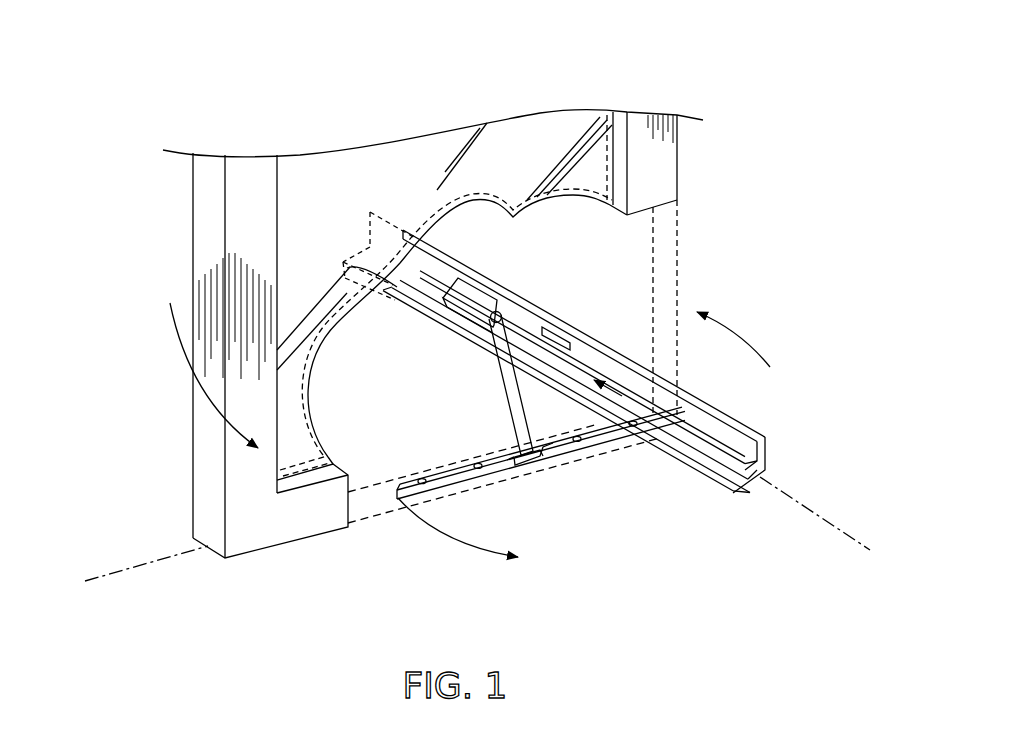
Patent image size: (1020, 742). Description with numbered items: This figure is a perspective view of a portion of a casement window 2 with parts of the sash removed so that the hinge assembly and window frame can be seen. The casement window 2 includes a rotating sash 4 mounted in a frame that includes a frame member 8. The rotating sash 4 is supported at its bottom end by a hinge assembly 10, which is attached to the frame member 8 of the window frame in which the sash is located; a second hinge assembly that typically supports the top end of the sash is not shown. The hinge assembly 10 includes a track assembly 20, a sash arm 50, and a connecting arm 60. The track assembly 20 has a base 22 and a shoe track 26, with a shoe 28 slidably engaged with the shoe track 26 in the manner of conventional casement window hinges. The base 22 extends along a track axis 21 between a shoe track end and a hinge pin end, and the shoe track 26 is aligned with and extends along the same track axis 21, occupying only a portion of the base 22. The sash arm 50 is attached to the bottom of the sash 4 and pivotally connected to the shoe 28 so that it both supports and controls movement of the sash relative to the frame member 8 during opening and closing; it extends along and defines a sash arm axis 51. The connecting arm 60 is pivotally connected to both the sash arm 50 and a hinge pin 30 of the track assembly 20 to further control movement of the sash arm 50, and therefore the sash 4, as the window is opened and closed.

The casement window 2 is at (103, 575).
The rotating sash 4 is at (716, 34).
The frame member 8 is at (723, 475).
The hinge assembly 10 is at (552, 509).
The track assembly 20 is at (767, 462).
The track axis 21 is at (850, 533).
The base 22 is at (557, 357).
The shoe track 26 is at (597, 358).
The shoe 28 is at (690, 430).
The hinge pin 30 is at (503, 316).
The sash arm 50 is at (567, 447).
The sash arm axis 51 is at (150, 566).
The connecting arm 60 is at (507, 398).